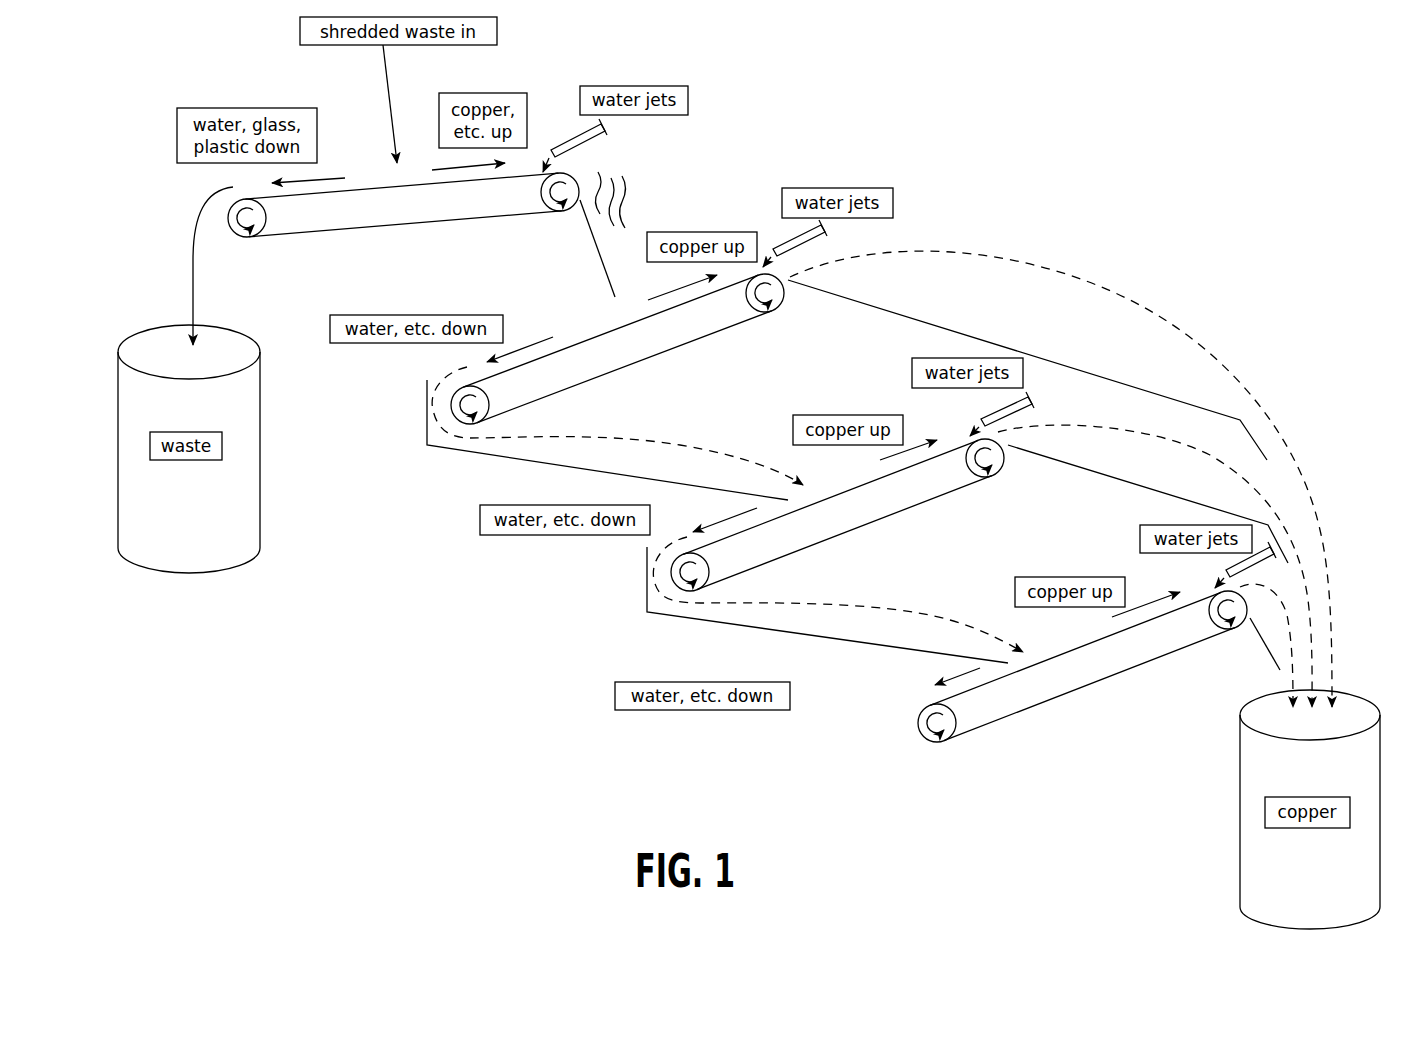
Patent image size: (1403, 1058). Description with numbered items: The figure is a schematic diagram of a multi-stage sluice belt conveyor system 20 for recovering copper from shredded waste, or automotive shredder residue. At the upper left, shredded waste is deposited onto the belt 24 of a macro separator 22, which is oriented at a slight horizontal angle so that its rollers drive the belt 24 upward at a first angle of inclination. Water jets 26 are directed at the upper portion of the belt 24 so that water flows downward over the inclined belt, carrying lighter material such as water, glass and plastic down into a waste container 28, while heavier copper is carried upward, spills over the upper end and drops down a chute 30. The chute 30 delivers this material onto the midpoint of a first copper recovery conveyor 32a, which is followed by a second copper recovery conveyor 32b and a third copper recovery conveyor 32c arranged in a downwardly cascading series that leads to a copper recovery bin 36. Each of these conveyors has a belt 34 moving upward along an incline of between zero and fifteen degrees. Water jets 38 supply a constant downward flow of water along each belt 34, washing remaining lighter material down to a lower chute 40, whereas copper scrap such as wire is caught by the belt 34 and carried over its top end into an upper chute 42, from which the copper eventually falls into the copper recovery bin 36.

The multi-stage sluice belt conveyor system 20 is at (405, 593).
The macro separator 22 is at (403, 223).
The belt 24 is at (367, 190).
The water jets 26 is at (570, 137).
The waste container 28 is at (176, 504).
The chute 30 is at (598, 250).
The first copper recovery conveyor 32a is at (617, 349).
The second copper recovery conveyor 32b is at (890, 518).
The third copper recovery conveyor 32c is at (1047, 717).
The belt 34 is at (585, 342).
The copper recovery bin 36 is at (1295, 872).
The water jets 38 is at (783, 240).
The lower chute 40 is at (423, 443).
The upper chute 42 is at (1070, 365).